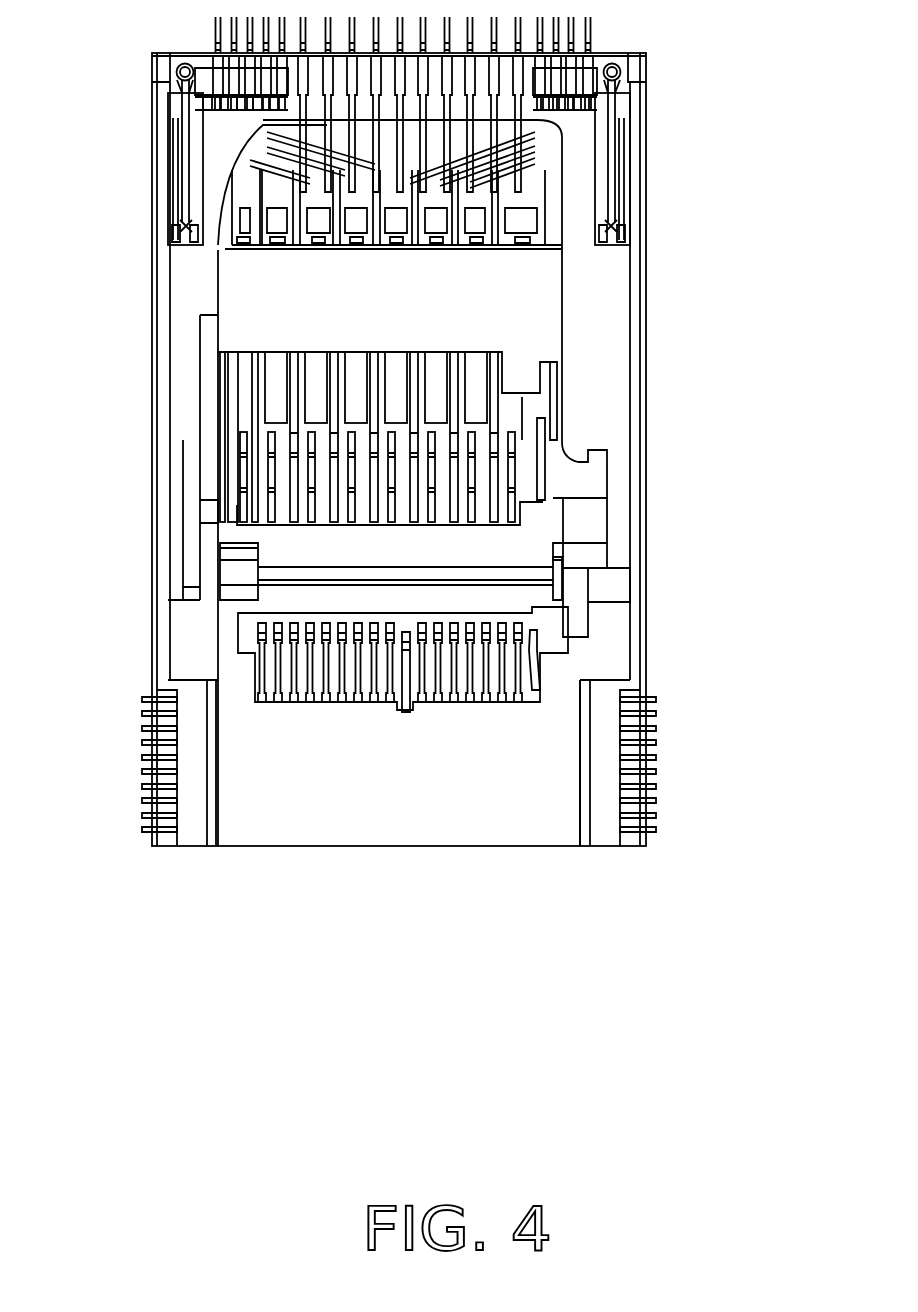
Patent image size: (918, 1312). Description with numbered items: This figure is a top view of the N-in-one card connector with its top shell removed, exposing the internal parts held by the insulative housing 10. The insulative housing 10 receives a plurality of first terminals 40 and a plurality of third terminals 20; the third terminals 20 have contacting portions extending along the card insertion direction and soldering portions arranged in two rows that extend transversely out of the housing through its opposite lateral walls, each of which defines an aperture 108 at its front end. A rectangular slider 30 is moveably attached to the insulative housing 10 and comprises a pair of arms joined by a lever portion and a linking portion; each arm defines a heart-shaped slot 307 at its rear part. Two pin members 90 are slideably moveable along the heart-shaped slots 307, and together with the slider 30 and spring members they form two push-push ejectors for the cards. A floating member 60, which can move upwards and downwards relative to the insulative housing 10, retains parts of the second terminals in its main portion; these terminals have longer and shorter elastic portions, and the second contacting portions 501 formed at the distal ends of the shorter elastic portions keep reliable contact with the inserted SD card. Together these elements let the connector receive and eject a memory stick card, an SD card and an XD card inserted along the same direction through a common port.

The insulative housing 10 is at (232, 815).
The third terminals 20 is at (500, 665).
The slider 30 is at (612, 345).
The first terminals 40 is at (328, 127).
The floating member 60 is at (540, 545).
The pin members 90 is at (613, 162).
The aperture 108 is at (617, 70).
The heart-shaped slot 307 is at (615, 230).
The second contacting portions 501 is at (270, 438).